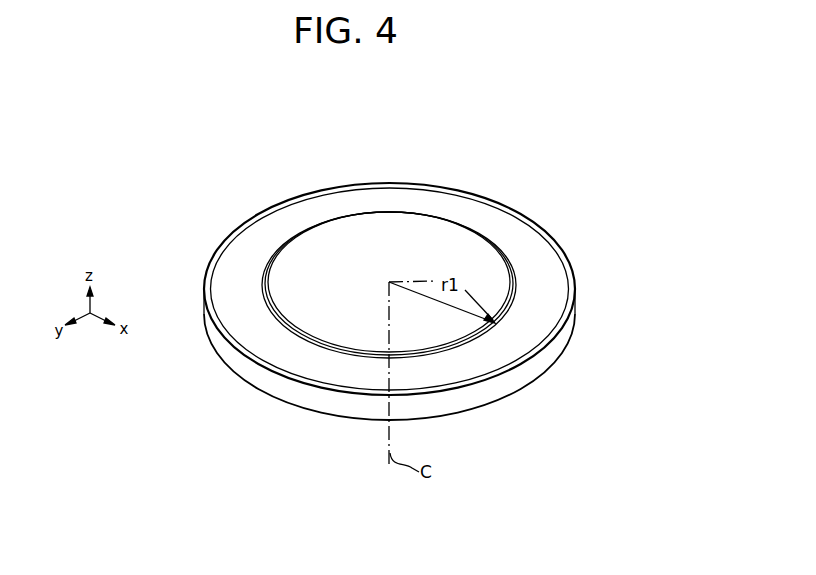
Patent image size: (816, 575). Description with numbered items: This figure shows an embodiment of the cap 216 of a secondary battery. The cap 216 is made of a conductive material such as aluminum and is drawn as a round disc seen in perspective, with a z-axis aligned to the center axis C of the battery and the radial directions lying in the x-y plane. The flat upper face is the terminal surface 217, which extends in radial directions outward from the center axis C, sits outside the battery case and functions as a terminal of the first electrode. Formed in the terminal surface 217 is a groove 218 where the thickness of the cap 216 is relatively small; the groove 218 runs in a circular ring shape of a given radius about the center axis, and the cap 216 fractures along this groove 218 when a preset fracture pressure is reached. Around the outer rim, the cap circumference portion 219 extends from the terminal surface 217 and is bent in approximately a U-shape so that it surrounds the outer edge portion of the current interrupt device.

The cap 216 is at (436, 263).
The terminal surface 217 is at (352, 233).
The groove 218 is at (516, 283).
The cap circumference portion 219 is at (577, 305).